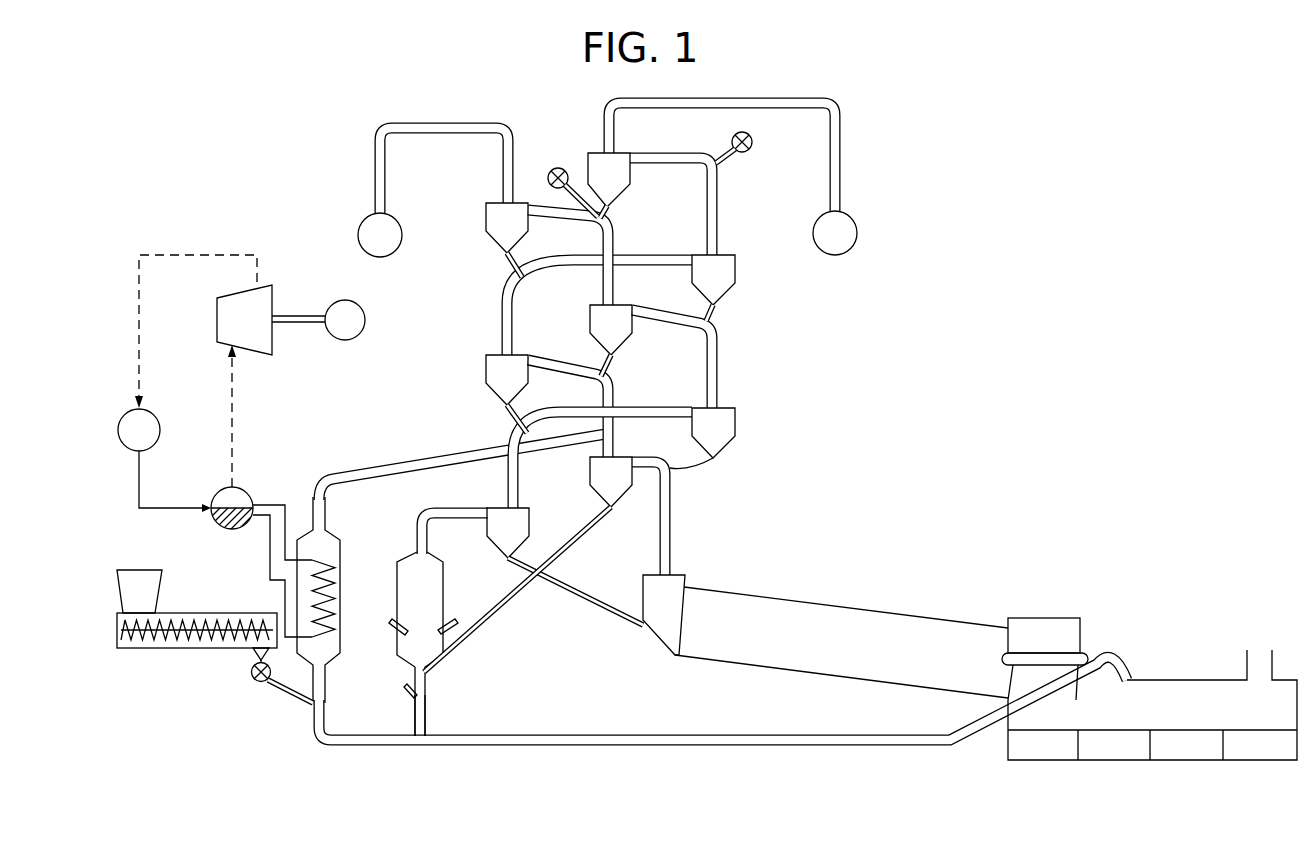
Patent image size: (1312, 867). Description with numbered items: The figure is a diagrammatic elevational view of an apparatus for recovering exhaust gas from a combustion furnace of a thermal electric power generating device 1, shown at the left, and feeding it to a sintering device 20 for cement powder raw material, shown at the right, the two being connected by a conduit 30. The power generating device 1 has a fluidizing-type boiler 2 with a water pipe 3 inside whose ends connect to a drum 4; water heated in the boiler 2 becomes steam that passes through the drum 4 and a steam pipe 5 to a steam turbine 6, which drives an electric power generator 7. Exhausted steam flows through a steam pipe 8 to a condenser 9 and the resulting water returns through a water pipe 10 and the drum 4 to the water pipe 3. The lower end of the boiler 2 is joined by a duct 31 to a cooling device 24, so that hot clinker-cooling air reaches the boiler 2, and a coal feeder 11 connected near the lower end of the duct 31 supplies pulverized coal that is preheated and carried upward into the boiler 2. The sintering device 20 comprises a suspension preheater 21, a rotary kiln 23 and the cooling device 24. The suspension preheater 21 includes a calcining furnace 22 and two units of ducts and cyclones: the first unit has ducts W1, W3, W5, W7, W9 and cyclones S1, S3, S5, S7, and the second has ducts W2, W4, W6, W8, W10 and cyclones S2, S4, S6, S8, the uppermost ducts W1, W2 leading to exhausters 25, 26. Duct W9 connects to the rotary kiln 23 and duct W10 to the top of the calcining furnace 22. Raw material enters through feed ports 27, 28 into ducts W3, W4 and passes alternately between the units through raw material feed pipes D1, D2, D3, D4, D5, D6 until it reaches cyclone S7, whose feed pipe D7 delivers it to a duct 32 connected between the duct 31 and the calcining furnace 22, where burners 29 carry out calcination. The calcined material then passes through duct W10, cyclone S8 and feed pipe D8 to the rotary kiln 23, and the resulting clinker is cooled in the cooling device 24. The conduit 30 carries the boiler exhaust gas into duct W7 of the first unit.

The thermal electric power generating device 1 is at (189, 753).
The boiler 2 is at (329, 526).
The water pipe 3 is at (337, 576).
The drum 4 is at (246, 492).
The steam pipe 5 is at (236, 410).
The steam turbine 6 is at (254, 352).
The electric power generator 7 is at (347, 342).
The steam pipe 8 is at (213, 255).
The condenser 9 is at (155, 426).
The water pipe 10 is at (170, 512).
The coal feeder 11 is at (186, 650).
The sintering device 20 is at (846, 529).
The suspension preheater 21 is at (900, 364).
The calcining furnace 22 is at (445, 566).
The rotary kiln 23 is at (860, 608).
The cooling device 24 is at (1180, 678).
The exhauster 25 is at (858, 236).
The exhauster 26 is at (358, 234).
The feed port of raw material supplying device 27 is at (753, 142).
The feed port of raw material supplying device 28 is at (558, 167).
The burner 29 is at (394, 620).
The conduit 30 is at (391, 466).
The duct 31 is at (666, 735).
The duct 32 is at (430, 708).
The duct W1 is at (841, 139).
The duct W2 is at (440, 122).
The duct W3 is at (718, 232).
The duct W4 is at (614, 290).
The duct W5 is at (502, 323).
The duct W6 is at (718, 386).
The duct W7 is at (615, 393).
The duct W8 is at (519, 486).
The duct W9 is at (671, 540).
The duct W10 is at (462, 511).
The cyclone S1 is at (621, 195).
The cyclone S2 is at (493, 237).
The cyclone S3 is at (736, 293).
The cyclone S4 is at (628, 338).
The cyclone S5 is at (492, 393).
The cyclone S6 is at (733, 448).
The cyclone S7 is at (620, 496).
The cyclone S8 is at (525, 548).
The raw material feed pipe D1 is at (612, 225).
The raw material feed pipe D2 is at (512, 270).
The raw material feed pipe D3 is at (716, 314).
The raw material feed pipe D4 is at (612, 363).
The raw material feed pipe D5 is at (515, 418).
The raw material feed pipe D6 is at (694, 467).
The raw material feed pipe D7 is at (548, 608).
The raw material feed pipe D8 is at (602, 620).